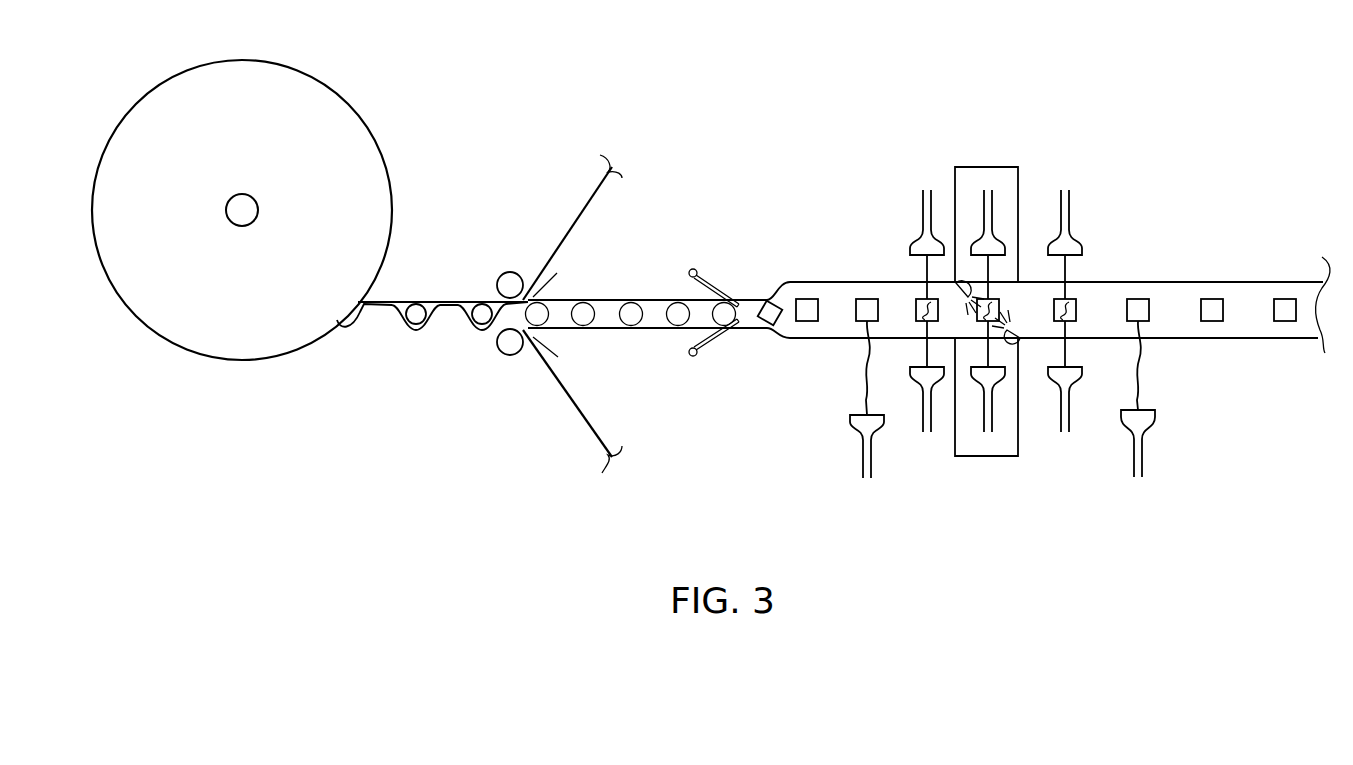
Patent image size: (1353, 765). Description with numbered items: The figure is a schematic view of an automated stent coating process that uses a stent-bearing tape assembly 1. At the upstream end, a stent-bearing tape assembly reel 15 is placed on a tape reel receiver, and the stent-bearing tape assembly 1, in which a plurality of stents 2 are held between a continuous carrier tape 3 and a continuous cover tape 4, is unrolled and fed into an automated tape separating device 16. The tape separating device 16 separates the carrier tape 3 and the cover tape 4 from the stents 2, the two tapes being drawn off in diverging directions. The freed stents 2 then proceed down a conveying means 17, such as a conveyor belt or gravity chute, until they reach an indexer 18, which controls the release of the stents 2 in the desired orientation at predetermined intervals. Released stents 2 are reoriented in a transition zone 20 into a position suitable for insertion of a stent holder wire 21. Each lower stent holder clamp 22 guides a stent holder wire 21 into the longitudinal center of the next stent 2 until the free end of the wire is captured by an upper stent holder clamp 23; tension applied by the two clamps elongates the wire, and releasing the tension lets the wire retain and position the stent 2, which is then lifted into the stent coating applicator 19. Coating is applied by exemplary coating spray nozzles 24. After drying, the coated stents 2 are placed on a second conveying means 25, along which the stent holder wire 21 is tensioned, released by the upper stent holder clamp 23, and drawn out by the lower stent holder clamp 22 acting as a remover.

The stent-bearing tape assembly 1 is at (367, 337).
The stents 2 is at (492, 302).
The carrier tape 3 is at (572, 221).
The cover tape 4 is at (553, 383).
The stent-bearing tape assembly reel 15 is at (217, 145).
The tape separating device 16 is at (548, 342).
The conveying means 17 is at (654, 298).
The indexer 18 is at (695, 270).
The stent coating applicator 19 is at (987, 163).
The transition zone 20 is at (782, 297).
The stent holder wire 21 is at (863, 393).
The lower stent holder clamp 22 is at (862, 467).
The upper stent holder clamp 23 is at (918, 224).
The coating spray nozzles 24 is at (961, 282).
The second conveying means 25 is at (1184, 281).